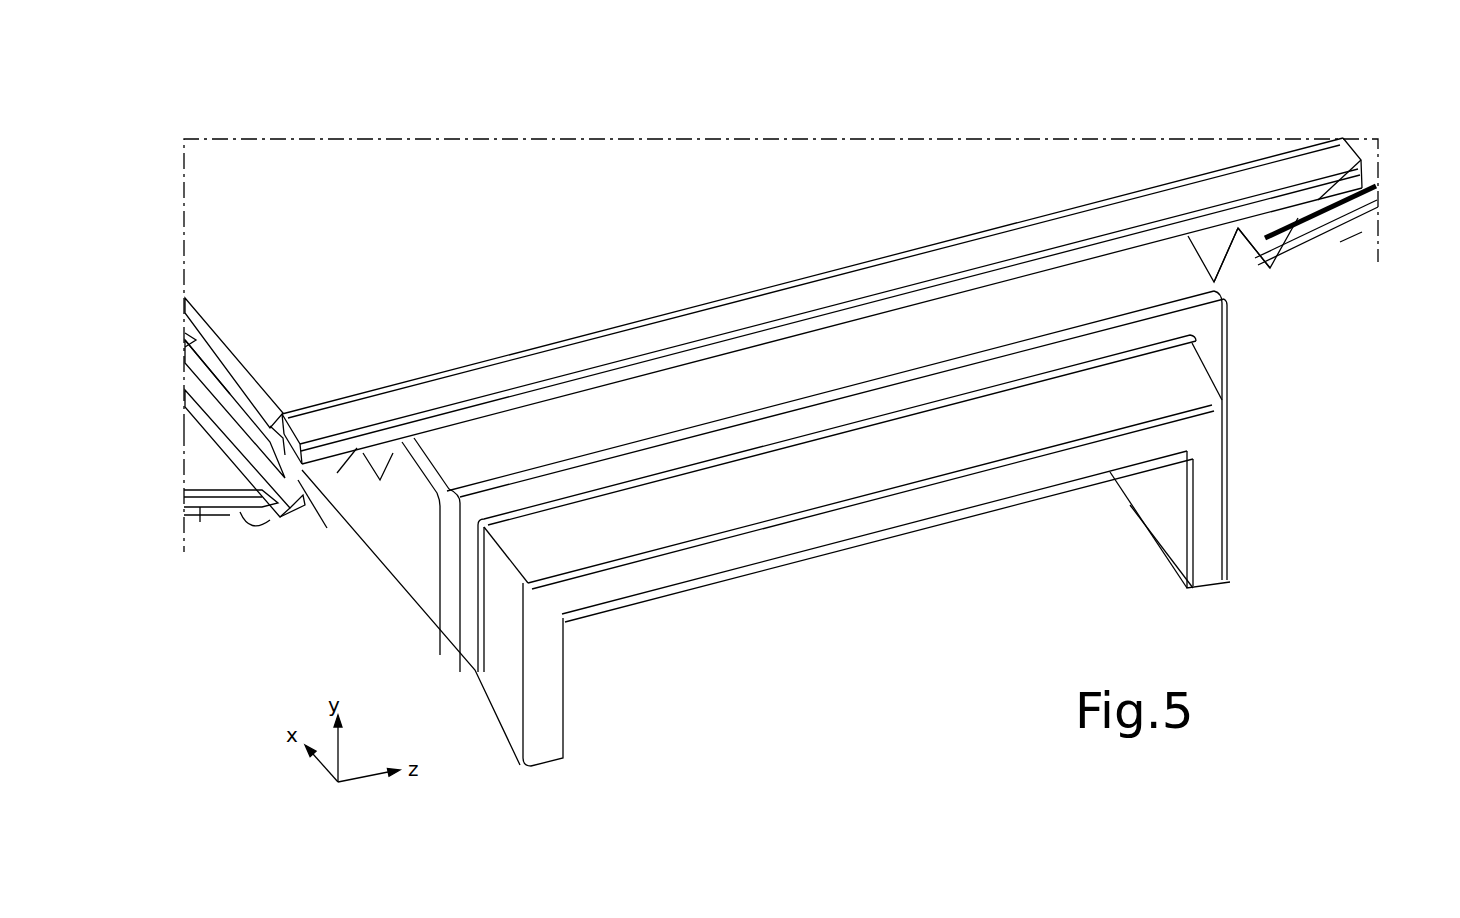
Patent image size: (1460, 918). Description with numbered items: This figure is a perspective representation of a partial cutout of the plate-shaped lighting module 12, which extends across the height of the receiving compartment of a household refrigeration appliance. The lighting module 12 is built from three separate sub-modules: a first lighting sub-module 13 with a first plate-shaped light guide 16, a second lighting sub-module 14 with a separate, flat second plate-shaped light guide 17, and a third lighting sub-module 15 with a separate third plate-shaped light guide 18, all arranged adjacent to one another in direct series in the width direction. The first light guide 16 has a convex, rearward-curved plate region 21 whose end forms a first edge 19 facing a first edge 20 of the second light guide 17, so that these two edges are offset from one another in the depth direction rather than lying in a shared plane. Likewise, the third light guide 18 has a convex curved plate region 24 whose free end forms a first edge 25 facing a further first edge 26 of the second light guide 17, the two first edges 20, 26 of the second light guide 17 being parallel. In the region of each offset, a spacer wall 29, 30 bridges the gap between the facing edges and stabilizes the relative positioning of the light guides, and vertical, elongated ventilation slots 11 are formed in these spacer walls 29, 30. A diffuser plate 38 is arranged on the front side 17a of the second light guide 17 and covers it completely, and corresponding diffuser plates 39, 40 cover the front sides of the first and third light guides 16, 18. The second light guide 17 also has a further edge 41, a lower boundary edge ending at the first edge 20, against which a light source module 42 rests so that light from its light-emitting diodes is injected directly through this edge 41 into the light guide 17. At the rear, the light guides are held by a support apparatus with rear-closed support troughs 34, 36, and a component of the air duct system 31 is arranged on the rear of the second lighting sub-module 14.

The ventilation slots 11 is at (283, 530).
The lighting module 12 is at (816, 541).
The first lighting sub-module 13 is at (168, 400).
The second lighting sub-module 14 is at (697, 402).
The third lighting sub-module 15 is at (1356, 248).
The first plate-shaped light guide 16 is at (232, 512).
The second plate-shaped light guide 17 is at (192, 327).
The front side 17a is at (193, 337).
The third plate-shaped light guide 18 is at (1338, 236).
The first edge 19 is at (240, 524).
The first edge 20 is at (237, 380).
The curved plate region 21 is at (194, 533).
The curved plate region 24 is at (1390, 190).
The first edge 25 is at (1312, 238).
The further first edge 26 is at (1345, 125).
The spacer wall 29 is at (290, 484).
The spacer wall 30 is at (1282, 268).
The air duct system 31 is at (896, 458).
The support trough 34 is at (234, 516).
The support trough 36 is at (1375, 220).
The diffuser plate 38 is at (299, 185).
The diffuser plate 39 is at (187, 472).
The diffuser plate 40 is at (1368, 165).
The further edge 41 is at (271, 426).
The light source module 42 is at (498, 362).